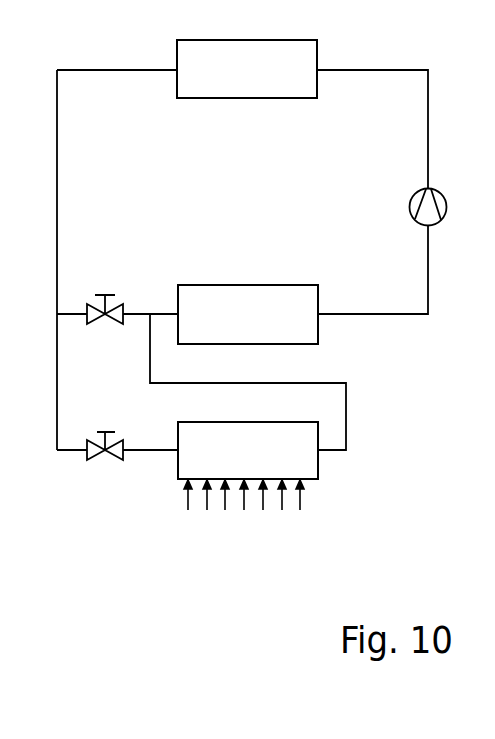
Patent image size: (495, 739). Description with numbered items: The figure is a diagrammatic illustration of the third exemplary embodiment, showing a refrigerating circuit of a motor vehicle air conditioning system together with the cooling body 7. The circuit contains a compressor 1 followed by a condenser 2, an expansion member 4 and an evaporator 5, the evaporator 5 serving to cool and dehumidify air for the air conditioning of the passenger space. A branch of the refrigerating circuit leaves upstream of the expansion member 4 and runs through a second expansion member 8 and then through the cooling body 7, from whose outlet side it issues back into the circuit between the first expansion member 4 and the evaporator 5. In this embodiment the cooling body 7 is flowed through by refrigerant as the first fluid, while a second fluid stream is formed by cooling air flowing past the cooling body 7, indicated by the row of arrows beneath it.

The compressor 1 is at (412, 205).
The condenser 2 is at (224, 84).
The expansion member 4 is at (112, 305).
The evaporator 5 is at (224, 332).
The cooling body 7 is at (227, 460).
The second expansion member 8 is at (102, 453).